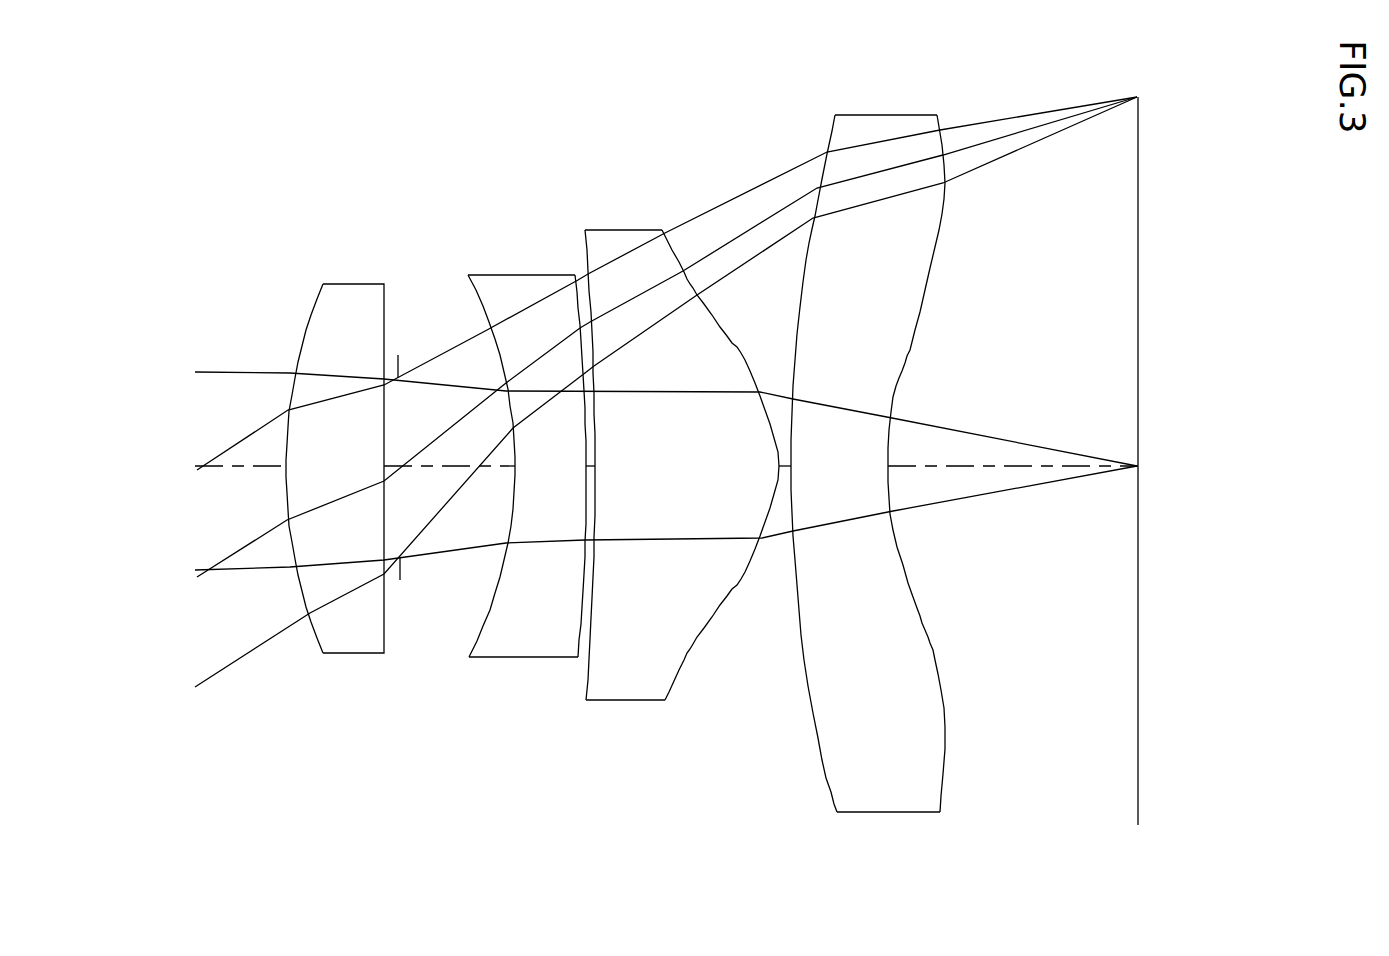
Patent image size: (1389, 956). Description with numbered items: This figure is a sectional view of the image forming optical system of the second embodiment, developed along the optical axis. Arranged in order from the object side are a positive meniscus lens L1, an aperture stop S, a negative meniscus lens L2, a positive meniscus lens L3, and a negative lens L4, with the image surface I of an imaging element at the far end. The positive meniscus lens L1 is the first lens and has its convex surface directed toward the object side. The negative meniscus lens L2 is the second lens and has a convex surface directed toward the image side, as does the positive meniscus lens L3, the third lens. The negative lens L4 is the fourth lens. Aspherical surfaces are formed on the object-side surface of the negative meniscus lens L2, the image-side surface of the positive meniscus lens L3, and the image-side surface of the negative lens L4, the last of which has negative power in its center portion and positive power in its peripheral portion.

The positive meniscus lens L1 is at (318, 301).
The negative meniscus lens L2 is at (514, 275).
The positive meniscus lens L3 is at (607, 230).
The negative lens L4 is at (880, 115).
The aperture stop S is at (399, 355).
The image surface I is at (1138, 207).